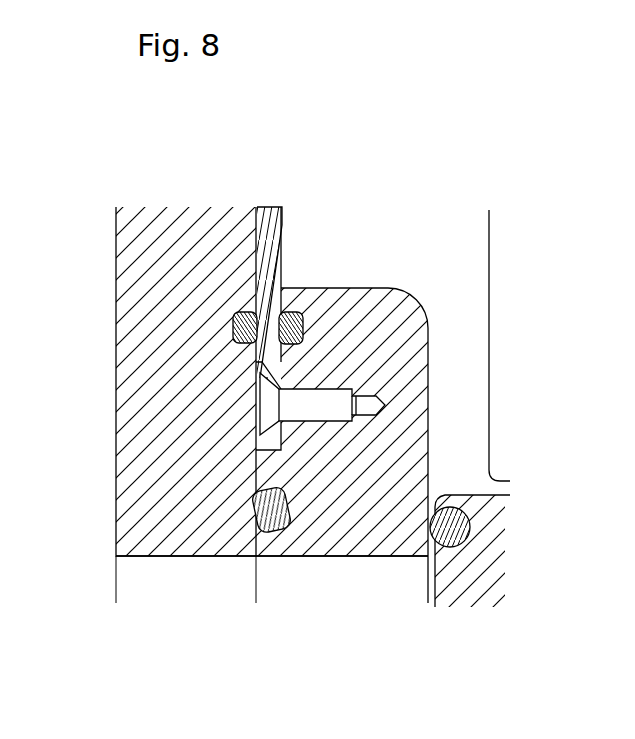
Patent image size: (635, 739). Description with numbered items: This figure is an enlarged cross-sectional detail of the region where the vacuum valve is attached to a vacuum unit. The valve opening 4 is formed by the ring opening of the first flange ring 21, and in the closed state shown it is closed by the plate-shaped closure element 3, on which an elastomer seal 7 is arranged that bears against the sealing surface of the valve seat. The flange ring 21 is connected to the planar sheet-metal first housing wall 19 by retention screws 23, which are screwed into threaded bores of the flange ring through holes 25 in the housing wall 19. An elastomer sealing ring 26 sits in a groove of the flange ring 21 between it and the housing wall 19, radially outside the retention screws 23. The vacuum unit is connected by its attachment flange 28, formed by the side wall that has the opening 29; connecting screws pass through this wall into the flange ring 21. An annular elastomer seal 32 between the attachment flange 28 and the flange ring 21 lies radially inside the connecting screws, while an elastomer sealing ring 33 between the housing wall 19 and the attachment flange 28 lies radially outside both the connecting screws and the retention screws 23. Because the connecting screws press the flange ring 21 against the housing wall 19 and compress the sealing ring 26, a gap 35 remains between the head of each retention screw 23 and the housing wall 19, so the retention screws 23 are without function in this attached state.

The attachment flange 28 is at (137, 267).
The first flange ring 21 is at (372, 358).
The first housing wall 19 is at (272, 230).
The holes 25 is at (256, 368).
The gap 35 is at (268, 378).
The retention screws 23 is at (298, 407).
The elastomer sealing ring 33 is at (237, 313).
The elastomer sealing ring 26 is at (302, 317).
The annular seal 32 is at (255, 534).
The closure element 3 is at (470, 578).
The elastomer seal 7 is at (455, 527).
The opening 29 is at (165, 584).
The valve opening 4 is at (337, 578).